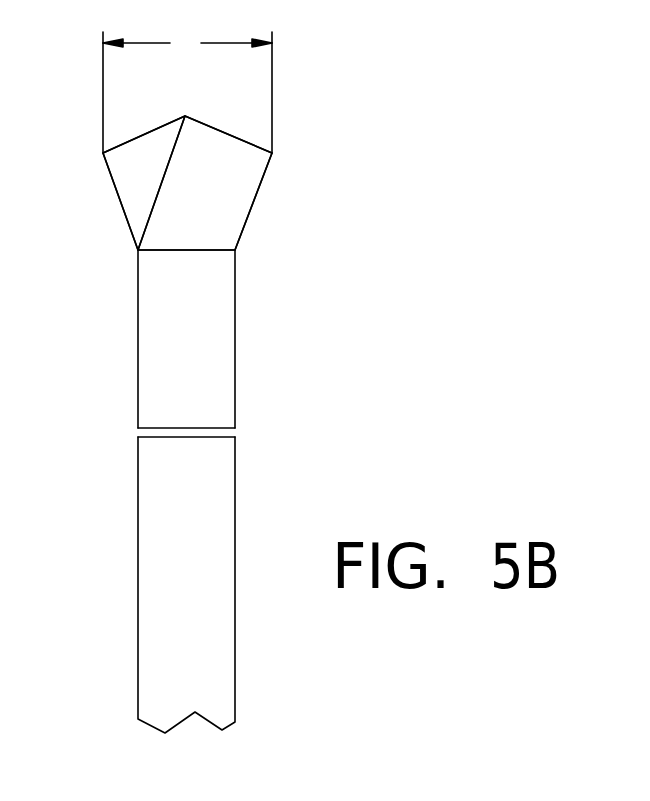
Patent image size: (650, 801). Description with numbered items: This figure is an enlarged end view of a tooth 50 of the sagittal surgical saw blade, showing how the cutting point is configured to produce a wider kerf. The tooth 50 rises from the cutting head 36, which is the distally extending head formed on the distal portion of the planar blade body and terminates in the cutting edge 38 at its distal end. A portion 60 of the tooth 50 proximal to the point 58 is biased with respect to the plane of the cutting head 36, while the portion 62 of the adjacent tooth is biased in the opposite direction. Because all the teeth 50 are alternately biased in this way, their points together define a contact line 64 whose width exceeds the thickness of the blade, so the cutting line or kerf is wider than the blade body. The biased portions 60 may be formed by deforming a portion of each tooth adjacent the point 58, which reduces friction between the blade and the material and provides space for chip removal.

The contact line 64 is at (187, 91).
The point 58 is at (273, 152).
The portion of the tooth 60 is at (232, 205).
The portion of the adjacent tooth 62 is at (143, 182).
The tooth 50 is at (216, 288).
The cutting edge 38 is at (225, 432).
The cutting head 36 is at (137, 481).